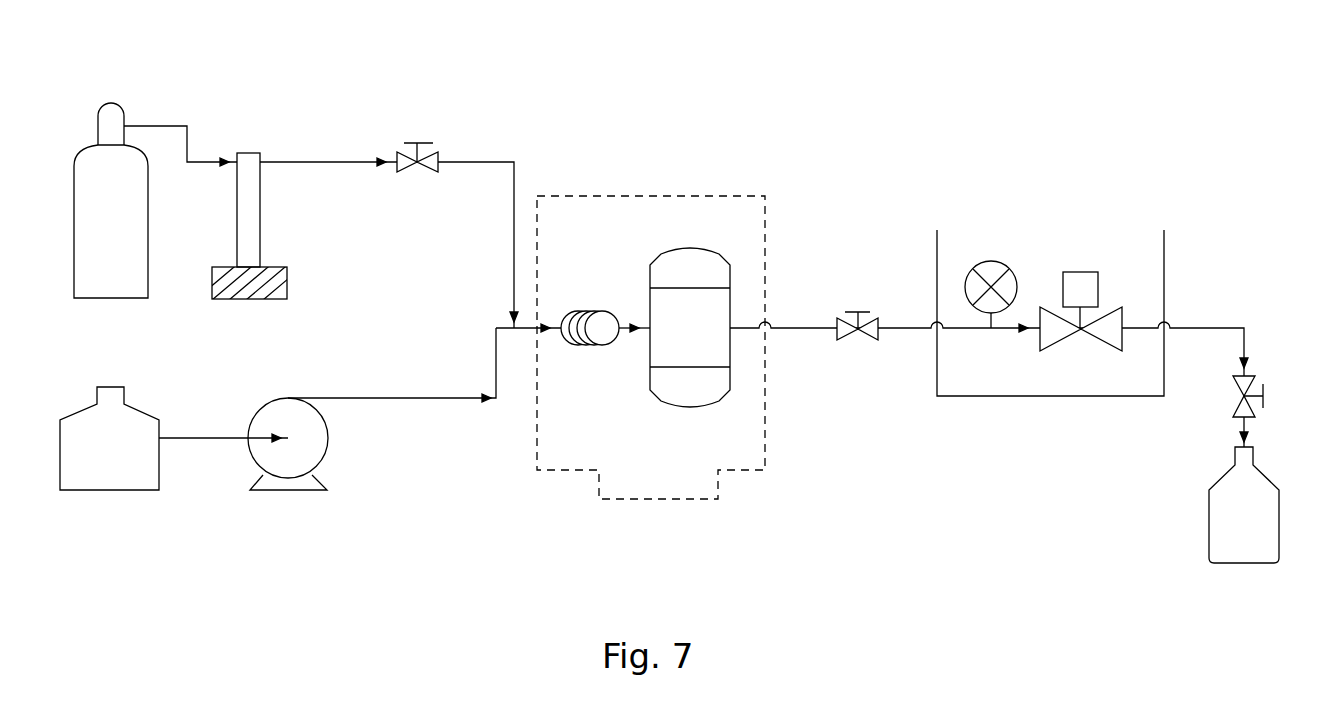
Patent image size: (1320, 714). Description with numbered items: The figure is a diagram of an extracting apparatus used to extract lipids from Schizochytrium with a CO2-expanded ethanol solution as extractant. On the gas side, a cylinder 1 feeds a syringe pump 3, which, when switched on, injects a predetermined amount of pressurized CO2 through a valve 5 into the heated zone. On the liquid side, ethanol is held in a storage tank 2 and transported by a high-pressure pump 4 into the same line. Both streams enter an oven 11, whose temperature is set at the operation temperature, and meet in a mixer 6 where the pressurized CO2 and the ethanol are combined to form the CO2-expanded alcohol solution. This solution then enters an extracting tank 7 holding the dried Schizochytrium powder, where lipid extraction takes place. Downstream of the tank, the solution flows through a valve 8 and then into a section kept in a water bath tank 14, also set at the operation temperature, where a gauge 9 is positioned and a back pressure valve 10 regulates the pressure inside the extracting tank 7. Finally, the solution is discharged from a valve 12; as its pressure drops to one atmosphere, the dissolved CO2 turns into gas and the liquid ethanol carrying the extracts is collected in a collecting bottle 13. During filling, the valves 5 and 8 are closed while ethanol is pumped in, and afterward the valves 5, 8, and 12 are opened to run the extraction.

The carbon dioxide gas cylinder 1 is at (112, 103).
The storage tank 2 is at (107, 387).
The syringe pump 3 is at (250, 153).
The high-pressure pump 4 is at (257, 410).
The valve 5 is at (441, 158).
The mixer 6 is at (580, 310).
The extracting tank 7 is at (692, 249).
The valve 8 is at (832, 320).
The pressure gauge 9 is at (990, 262).
The back pressure valve 10 is at (1080, 272).
The oven 11 is at (615, 196).
The valve 12 is at (1247, 372).
The collecting bottle 13 is at (1265, 472).
The water bath tank 14 is at (1035, 397).